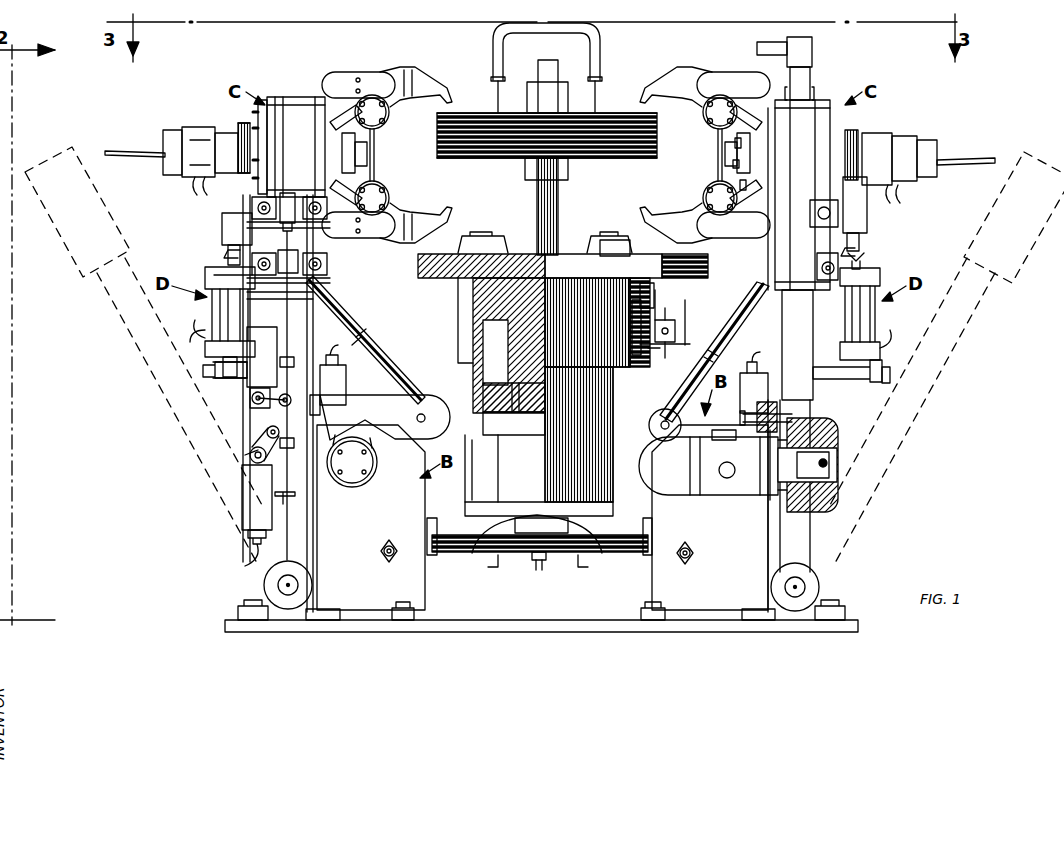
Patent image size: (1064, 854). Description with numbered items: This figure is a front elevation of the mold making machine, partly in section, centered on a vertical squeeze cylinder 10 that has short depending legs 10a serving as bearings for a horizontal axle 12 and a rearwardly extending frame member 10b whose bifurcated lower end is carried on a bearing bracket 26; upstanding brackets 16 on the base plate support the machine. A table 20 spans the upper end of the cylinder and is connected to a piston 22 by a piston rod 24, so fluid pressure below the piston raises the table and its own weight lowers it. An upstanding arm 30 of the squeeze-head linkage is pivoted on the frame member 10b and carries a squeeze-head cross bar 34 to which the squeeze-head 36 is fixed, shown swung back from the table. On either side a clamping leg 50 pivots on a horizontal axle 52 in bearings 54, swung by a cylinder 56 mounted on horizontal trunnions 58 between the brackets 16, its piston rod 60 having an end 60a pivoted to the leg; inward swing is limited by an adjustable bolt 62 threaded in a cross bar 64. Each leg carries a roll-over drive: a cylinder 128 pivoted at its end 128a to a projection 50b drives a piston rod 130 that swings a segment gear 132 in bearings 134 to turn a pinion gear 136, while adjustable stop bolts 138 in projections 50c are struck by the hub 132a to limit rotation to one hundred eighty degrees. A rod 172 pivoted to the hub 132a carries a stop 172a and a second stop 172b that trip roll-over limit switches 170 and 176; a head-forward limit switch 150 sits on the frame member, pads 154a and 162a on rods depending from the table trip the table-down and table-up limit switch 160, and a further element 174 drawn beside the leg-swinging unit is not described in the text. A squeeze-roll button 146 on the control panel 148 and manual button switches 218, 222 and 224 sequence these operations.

The squeeze cylinder 10 is at (478, 373).
The depending legs 10a is at (465, 547).
The frame member 10b is at (500, 560).
The horizontal axle 12 is at (536, 570).
The upstanding brackets 16 is at (412, 610).
The table 20 is at (445, 278).
The piston 22 is at (482, 395).
The piston rod 24 is at (470, 349).
The bearing bracket 26 is at (540, 560).
The upstanding arm 30 is at (540, 70).
The squeeze-head cross bar 34 is at (568, 94).
The squeeze-head 36 is at (604, 158).
The clamping leg 50 is at (294, 97).
The projection 50b is at (257, 385).
The projections 50c is at (236, 214).
The horizontal axle 52 is at (288, 598).
The bearings 54 is at (264, 585).
The cylinders 56 is at (355, 482).
The horizontal trunnions 58 is at (690, 520).
The piston rods 60 is at (838, 430).
The ends of piston rods 60a is at (840, 488).
The adjustable bolt 62 is at (792, 418).
The cross bar 64 is at (780, 410).
The cylinder 128 is at (226, 328).
The end of cylinder 128a is at (880, 382).
The piston rod 130 is at (870, 265).
The segment gear 132 is at (245, 237).
The hub 132a is at (316, 230).
The bearings 134 is at (240, 253).
The pinion gear 136 is at (237, 125).
The adjustable stop bolts 138 is at (286, 195).
The squeeze-roll button 146 is at (735, 140).
The control panel 148 is at (790, 238).
The head-forward limit switch 150 is at (840, 440).
The pad 154a is at (645, 283).
The table-up limit switch 160 is at (665, 360).
The pad 162a is at (672, 318).
The roll-over limit switch 170 is at (257, 365).
The rod 172 is at (289, 505).
The stop 172a is at (303, 396).
The second stop 172b is at (282, 465).
The cylinder rod 174 is at (375, 360).
The roll-over limit switch 176 is at (248, 511).
The button switch 218 is at (712, 152).
The button switch 222 is at (733, 166).
The button switch 224 is at (740, 185).